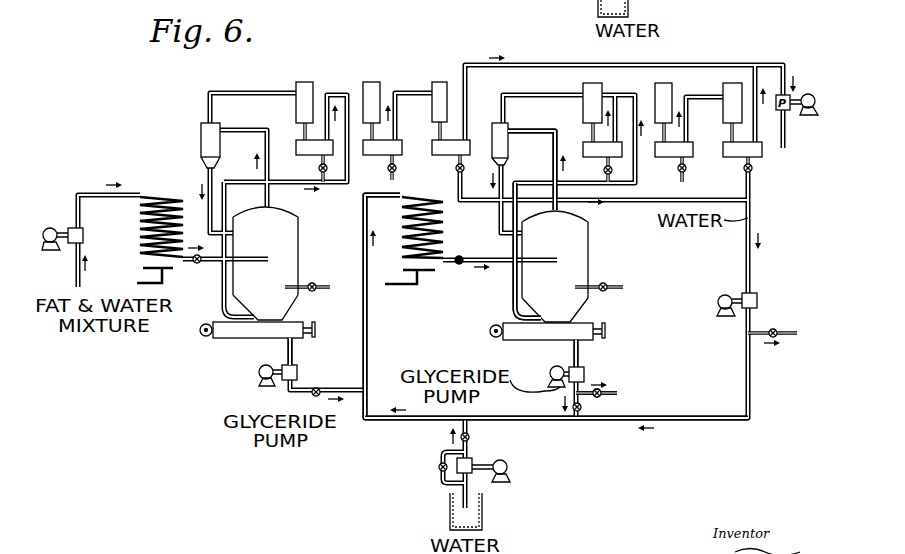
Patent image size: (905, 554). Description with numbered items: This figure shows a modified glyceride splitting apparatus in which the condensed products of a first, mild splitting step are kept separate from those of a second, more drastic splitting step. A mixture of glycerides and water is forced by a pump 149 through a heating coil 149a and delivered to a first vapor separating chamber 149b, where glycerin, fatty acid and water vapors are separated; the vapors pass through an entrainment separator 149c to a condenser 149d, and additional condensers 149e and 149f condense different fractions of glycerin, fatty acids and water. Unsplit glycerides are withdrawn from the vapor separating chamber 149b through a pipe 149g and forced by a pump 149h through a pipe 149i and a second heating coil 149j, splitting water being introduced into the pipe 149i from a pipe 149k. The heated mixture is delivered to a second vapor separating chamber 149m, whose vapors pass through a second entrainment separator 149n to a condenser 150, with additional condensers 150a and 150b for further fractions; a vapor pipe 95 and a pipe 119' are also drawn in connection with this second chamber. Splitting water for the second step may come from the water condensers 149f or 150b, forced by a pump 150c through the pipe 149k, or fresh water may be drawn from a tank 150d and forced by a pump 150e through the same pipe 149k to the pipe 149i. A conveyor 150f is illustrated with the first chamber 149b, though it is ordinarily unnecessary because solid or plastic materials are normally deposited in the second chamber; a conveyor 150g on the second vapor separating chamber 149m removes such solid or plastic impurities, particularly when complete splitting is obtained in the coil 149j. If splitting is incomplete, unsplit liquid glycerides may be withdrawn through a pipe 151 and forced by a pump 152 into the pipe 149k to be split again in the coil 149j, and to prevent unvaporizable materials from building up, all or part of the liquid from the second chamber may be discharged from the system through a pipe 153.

The vapor pipe 95 is at (553, 131).
The pipe 119' is at (502, 250).
The pump 149 is at (83, 236).
The heating coil 149a is at (157, 197).
The vapor separating chamber 149b is at (299, 233).
The entrainment separator 149c is at (201, 127).
The condenser 149d is at (325, 76).
The condenser 149e is at (392, 75).
The condenser 149f is at (444, 84).
The pipe 149g is at (295, 358).
The pump 149h is at (280, 380).
The entrainment separator 149n is at (492, 131).
The pipe 149i is at (370, 333).
The heating coil 149j is at (427, 188).
The pipe 149k is at (400, 422).
The vapor separating chamber 149m is at (590, 243).
The condenser 150 is at (583, 88).
The condenser 150a is at (660, 87).
The condenser 150b is at (732, 84).
The pump 150c is at (757, 300).
The tank 150d is at (484, 507).
The pump 150e is at (474, 457).
The conveyor 150f is at (233, 341).
The conveyor 150g is at (515, 340).
The pipe 151 is at (580, 355).
The pump 152 is at (585, 373).
The pipe 153 is at (615, 394).